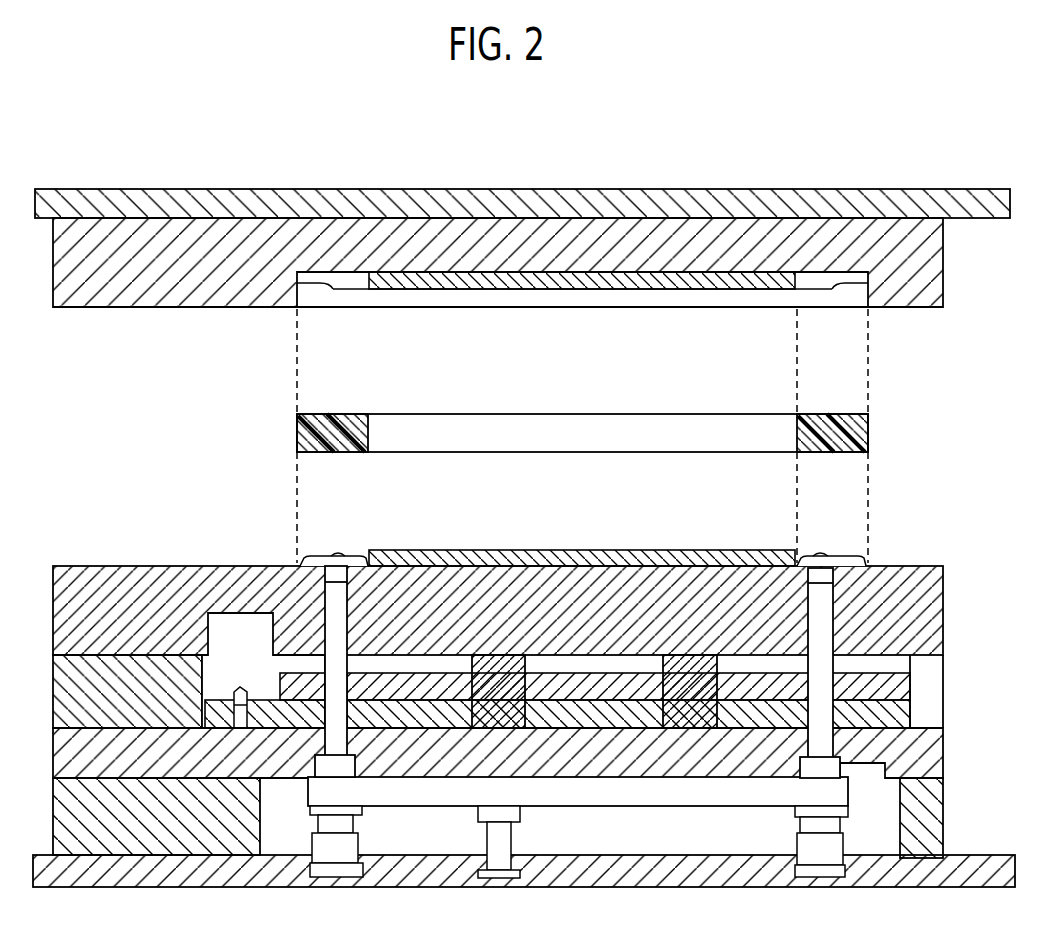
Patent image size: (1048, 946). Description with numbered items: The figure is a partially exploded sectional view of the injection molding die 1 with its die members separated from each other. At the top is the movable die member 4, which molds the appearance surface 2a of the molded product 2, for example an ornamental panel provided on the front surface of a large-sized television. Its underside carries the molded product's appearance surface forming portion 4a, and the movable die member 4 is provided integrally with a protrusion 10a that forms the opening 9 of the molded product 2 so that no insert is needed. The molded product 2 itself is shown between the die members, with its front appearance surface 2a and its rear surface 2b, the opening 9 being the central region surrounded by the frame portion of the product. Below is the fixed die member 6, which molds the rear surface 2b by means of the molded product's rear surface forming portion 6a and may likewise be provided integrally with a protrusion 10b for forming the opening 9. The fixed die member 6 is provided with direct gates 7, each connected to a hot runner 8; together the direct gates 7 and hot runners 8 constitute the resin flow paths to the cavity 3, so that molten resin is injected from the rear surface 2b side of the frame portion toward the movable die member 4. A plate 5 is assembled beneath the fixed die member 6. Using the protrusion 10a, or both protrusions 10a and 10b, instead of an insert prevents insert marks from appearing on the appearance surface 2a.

The injection molding die 1 is at (543, 178).
The molded product 2 is at (266, 411).
The appearance surface 2a is at (843, 414).
The rear surface 2b is at (843, 452).
The cavity 3 is at (582, 436).
The movable die member 4 is at (203, 226).
The molded product's appearance surface forming portion 4a is at (333, 291).
The plate 5 is at (625, 778).
The fixed die member 6 is at (937, 612).
The molded product's rear surface forming portion 6a is at (347, 556).
The direct gate 7 is at (320, 556).
The hot runner 8 is at (827, 670).
The opening 9 is at (586, 414).
The protrusion 10a is at (532, 288).
The protrusion 10b is at (591, 550).